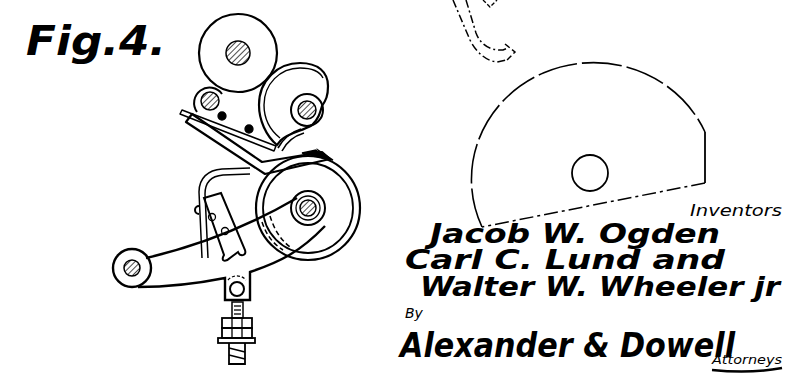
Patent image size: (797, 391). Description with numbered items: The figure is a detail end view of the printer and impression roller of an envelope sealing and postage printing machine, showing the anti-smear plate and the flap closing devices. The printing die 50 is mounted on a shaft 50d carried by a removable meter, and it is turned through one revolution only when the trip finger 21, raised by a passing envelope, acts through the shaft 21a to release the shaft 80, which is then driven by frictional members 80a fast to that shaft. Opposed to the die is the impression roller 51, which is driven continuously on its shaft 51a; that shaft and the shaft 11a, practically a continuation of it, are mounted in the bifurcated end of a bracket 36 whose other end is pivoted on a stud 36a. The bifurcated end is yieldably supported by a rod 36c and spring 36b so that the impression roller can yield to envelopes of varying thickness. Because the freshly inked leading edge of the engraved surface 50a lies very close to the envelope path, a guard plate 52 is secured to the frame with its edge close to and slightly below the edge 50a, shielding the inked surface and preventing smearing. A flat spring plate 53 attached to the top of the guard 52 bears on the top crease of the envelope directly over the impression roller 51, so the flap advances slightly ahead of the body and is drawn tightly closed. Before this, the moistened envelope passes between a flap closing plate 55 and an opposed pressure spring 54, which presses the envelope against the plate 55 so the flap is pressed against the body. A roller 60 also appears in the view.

The idler roller 60 is at (252, 28).
The shaft 21a is at (200, 94).
The printing die 50 is at (323, 72).
The shaft 50d is at (315, 103).
The engraved surface 50a is at (295, 136).
The guard plate 52 is at (186, 118).
The pressure spring 54 is at (202, 140).
The flap closing plate 55 is at (214, 176).
The flat spring plate 53 is at (324, 158).
The impression roller 51 is at (342, 189).
The shaft 51a is at (318, 216).
The bracket 36 is at (260, 270).
The stud 36a is at (128, 274).
The spring 36b is at (250, 346).
The rod 36c is at (245, 309).
The trip finger 21 is at (442, 0).
The frictional members 80a is at (614, 0).
The shaft 80 is at (711, 6).
The shaft 11a is at (596, 167).